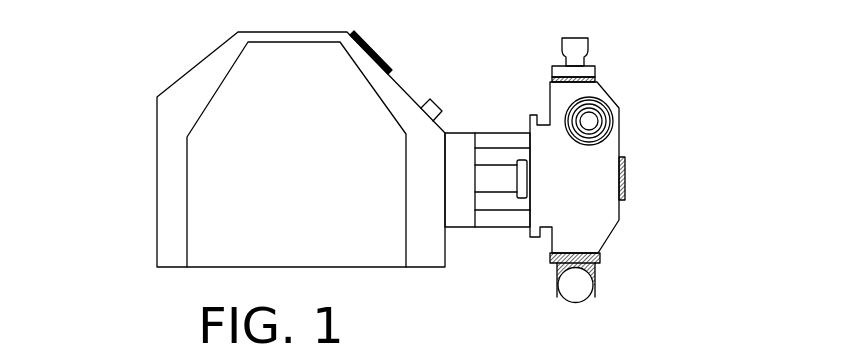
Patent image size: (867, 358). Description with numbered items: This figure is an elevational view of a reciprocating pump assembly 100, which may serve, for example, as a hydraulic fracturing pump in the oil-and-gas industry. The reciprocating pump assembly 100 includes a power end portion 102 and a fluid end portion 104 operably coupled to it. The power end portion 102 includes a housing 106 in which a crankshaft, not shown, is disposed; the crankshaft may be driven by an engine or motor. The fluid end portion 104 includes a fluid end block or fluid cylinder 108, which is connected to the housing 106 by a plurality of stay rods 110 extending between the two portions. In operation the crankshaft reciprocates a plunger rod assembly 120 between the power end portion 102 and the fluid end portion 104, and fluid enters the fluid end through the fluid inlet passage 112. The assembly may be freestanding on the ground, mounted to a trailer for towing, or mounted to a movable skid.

The reciprocating pump assembly 100 is at (630, 80).
The power end portion 102 is at (155, 178).
The fluid end portion 104 is at (632, 209).
The housing 106 is at (213, 53).
The fluid cylinder 108 is at (549, 97).
The stay rods 110 is at (507, 131).
The fluid inlet passage 112 is at (582, 303).
The plunger rod assembly 120 is at (502, 198).